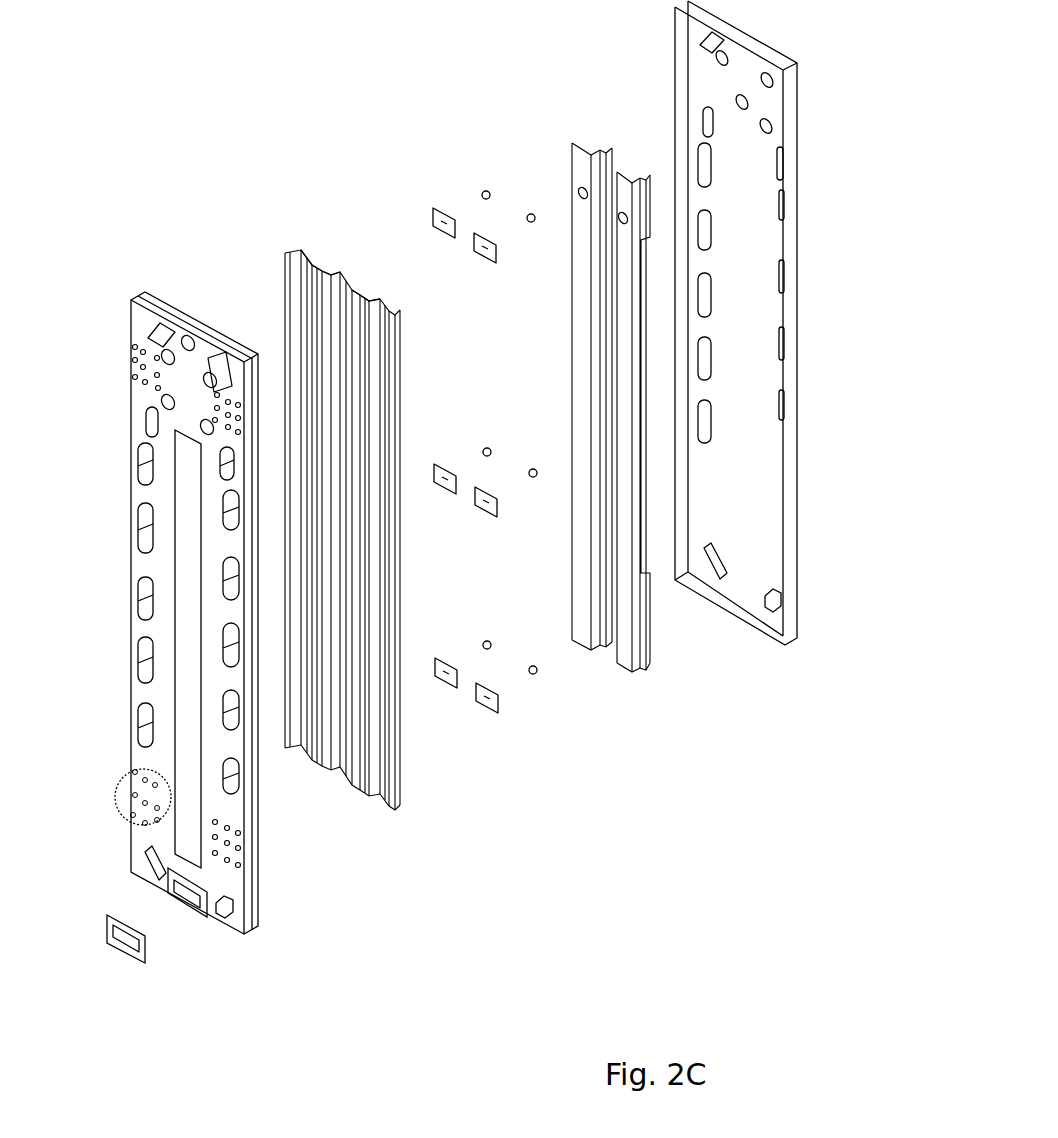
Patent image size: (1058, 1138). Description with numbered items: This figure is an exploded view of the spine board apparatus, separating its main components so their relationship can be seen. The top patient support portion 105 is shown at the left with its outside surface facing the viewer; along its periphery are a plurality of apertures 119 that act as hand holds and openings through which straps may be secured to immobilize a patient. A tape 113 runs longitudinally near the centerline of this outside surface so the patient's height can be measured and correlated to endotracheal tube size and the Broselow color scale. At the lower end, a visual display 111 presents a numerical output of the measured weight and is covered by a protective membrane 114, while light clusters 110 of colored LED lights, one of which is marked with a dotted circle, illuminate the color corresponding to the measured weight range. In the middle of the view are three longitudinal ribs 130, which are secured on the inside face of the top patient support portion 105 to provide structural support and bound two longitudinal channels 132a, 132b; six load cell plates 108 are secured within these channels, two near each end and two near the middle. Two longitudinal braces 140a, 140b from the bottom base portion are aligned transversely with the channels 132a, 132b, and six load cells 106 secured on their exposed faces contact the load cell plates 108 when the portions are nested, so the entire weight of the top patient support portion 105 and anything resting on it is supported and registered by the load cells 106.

The top patient support portion 105 is at (138, 393).
The load cells 106 is at (486, 191).
The load cell plates 108 is at (433, 215).
The light clusters 110 is at (125, 775).
The visual display 111 is at (190, 893).
The tape 113 is at (185, 507).
The membrane 114 is at (124, 947).
The apertures 119 is at (145, 712).
The longitudinal ribs 130 is at (370, 501).
The longitudinal channel 132a is at (367, 299).
The longitudinal channel 132b is at (322, 272).
The longitudinal brace 140a is at (618, 180).
The longitudinal brace 140b is at (573, 150).